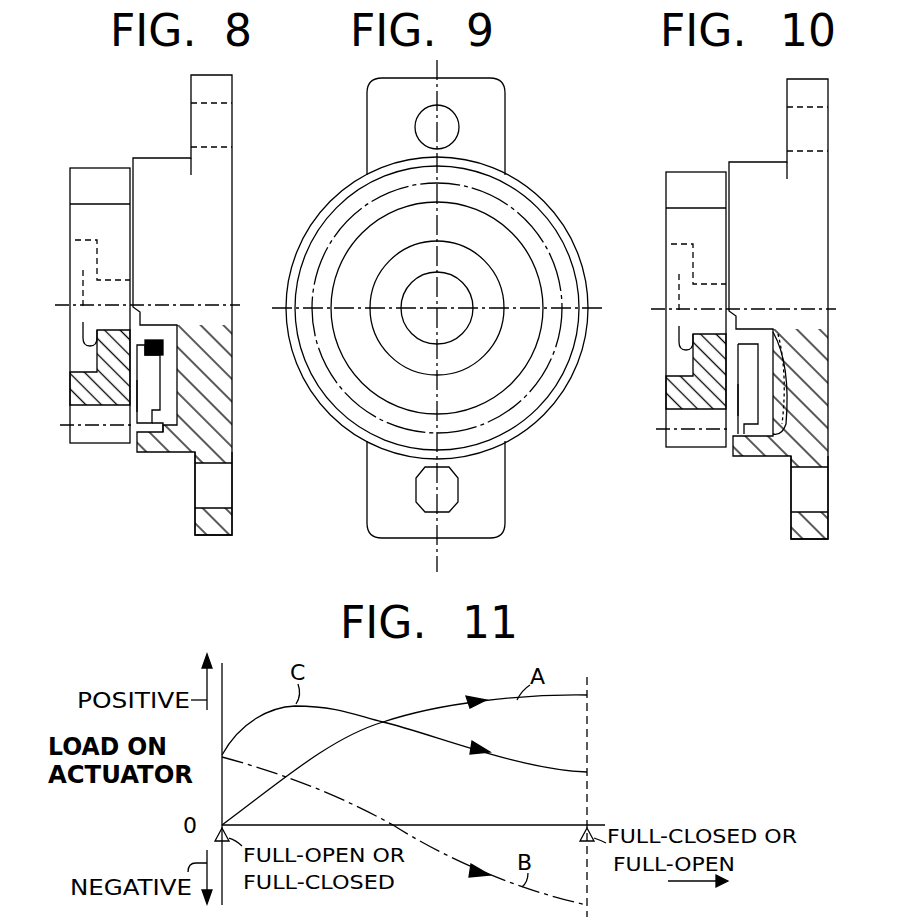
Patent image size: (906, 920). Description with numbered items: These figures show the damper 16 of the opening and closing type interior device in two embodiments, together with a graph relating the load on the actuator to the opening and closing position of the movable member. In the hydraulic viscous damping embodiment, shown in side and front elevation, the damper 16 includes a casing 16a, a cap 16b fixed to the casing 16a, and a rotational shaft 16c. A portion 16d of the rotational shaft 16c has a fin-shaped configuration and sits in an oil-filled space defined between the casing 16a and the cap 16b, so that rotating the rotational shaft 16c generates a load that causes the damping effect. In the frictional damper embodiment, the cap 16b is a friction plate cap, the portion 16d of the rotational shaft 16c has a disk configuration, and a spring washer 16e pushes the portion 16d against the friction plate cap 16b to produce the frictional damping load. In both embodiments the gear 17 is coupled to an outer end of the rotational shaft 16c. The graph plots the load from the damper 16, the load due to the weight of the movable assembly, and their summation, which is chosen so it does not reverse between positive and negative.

In FIG. 8, the damper 16 is at (163, 173).
In FIG. 9, the damper 16 is at (523, 183).
In FIG. 10, the damper 16 is at (778, 305).
In FIG. 8, the casing 16a is at (200, 400).
In FIG. 10, the casing 16a is at (784, 471).
In FIG. 8, the cap 16b is at (145, 397).
In FIG. 10, the cap 16b is at (675, 386).
In FIG. 8, the rotational shaft 16c is at (92, 323).
In FIG. 10, the rotational shaft 16c is at (653, 305).
In FIG. 8, the portion of the rotational shaft 16d is at (172, 400).
In FIG. 10, the spring washer 16e is at (743, 412).
In FIG. 8, the gear 17 is at (102, 168).
In FIG. 9, the gear 17 is at (557, 230).
In FIG. 10, the gear 17 is at (693, 276).